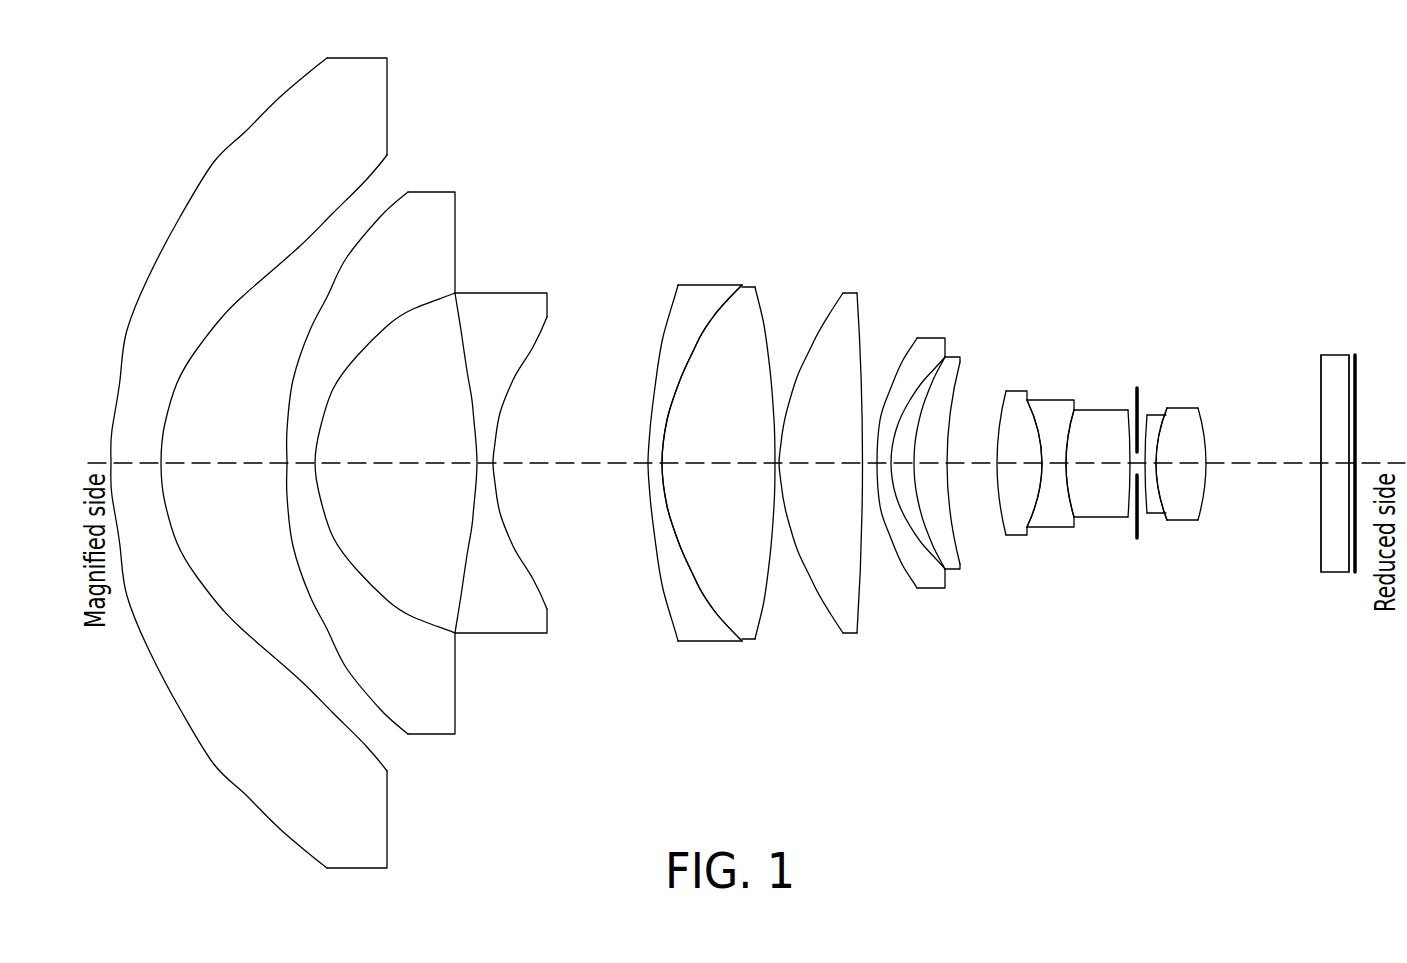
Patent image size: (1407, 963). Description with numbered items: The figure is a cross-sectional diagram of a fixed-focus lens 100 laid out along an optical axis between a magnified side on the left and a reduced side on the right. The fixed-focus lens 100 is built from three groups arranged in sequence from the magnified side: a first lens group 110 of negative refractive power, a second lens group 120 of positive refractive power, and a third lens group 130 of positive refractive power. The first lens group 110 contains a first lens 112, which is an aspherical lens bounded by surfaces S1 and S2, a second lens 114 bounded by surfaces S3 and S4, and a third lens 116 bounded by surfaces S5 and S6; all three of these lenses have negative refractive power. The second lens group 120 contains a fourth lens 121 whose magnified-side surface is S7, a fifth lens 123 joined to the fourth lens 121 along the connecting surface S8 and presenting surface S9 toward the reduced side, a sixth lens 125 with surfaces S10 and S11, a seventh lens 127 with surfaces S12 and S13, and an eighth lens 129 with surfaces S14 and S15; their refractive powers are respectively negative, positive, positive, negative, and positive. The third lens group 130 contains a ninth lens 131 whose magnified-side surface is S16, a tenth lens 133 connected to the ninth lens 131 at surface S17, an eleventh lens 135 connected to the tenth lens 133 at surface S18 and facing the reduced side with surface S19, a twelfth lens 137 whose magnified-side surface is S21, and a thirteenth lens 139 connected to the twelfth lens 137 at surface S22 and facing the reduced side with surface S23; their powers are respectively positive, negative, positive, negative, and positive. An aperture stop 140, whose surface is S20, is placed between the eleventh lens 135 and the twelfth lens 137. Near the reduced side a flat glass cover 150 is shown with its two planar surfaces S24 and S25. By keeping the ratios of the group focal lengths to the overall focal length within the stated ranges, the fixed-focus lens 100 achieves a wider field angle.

The fixed-focus lens 100 is at (1245, 817).
The first lens group 110 is at (555, 740).
The first lens 112 is at (330, 454).
The second lens 114 is at (418, 442).
The third lens 116 is at (510, 431).
The second lens group 120 is at (978, 746).
The fourth lens 121 is at (680, 429).
The fifth lens 123 is at (739, 439).
The sixth lens 125 is at (827, 461).
The seventh lens 127 is at (911, 474).
The eighth lens 129 is at (961, 479).
The third lens group 130 is at (1248, 640).
The ninth lens 131 is at (1020, 431).
The tenth lens 133 is at (1056, 468).
The eleventh lens 135 is at (1102, 435).
The twelfth lens 137 is at (1143, 447).
The thirteenth lens 139 is at (1205, 454).
The aperture stop 140 is at (1136, 397).
The light valve / cover glass 150 is at (1334, 488).
The surface S1 is at (213, 164).
The surface S2 is at (383, 168).
The surface S3 is at (383, 220).
The surface S4 is at (402, 315).
The surface S5 is at (466, 384).
The surface S6 is at (536, 347).
The surface S7 is at (668, 313).
The surface S8 is at (720, 314).
The surface S9 is at (768, 315).
The surface S10 is at (820, 317).
The surface S11 is at (862, 330).
The surface S12 is at (887, 376).
The surface S13 is at (906, 401).
The surface S14 is at (931, 372).
The surface S15 is at (960, 393).
The surface S16 is at (998, 425).
The surface S17 is at (1030, 415).
The surface S18 is at (1066, 427).
The surface S19 is at (1125, 430).
The surface S20 is at (1150, 430).
The surface S21 is at (1161, 438).
The surface S22 is at (1168, 432).
The surface S23 is at (1208, 430).
The surface S24 is at (1320, 418).
The surface S25 is at (1356, 418).